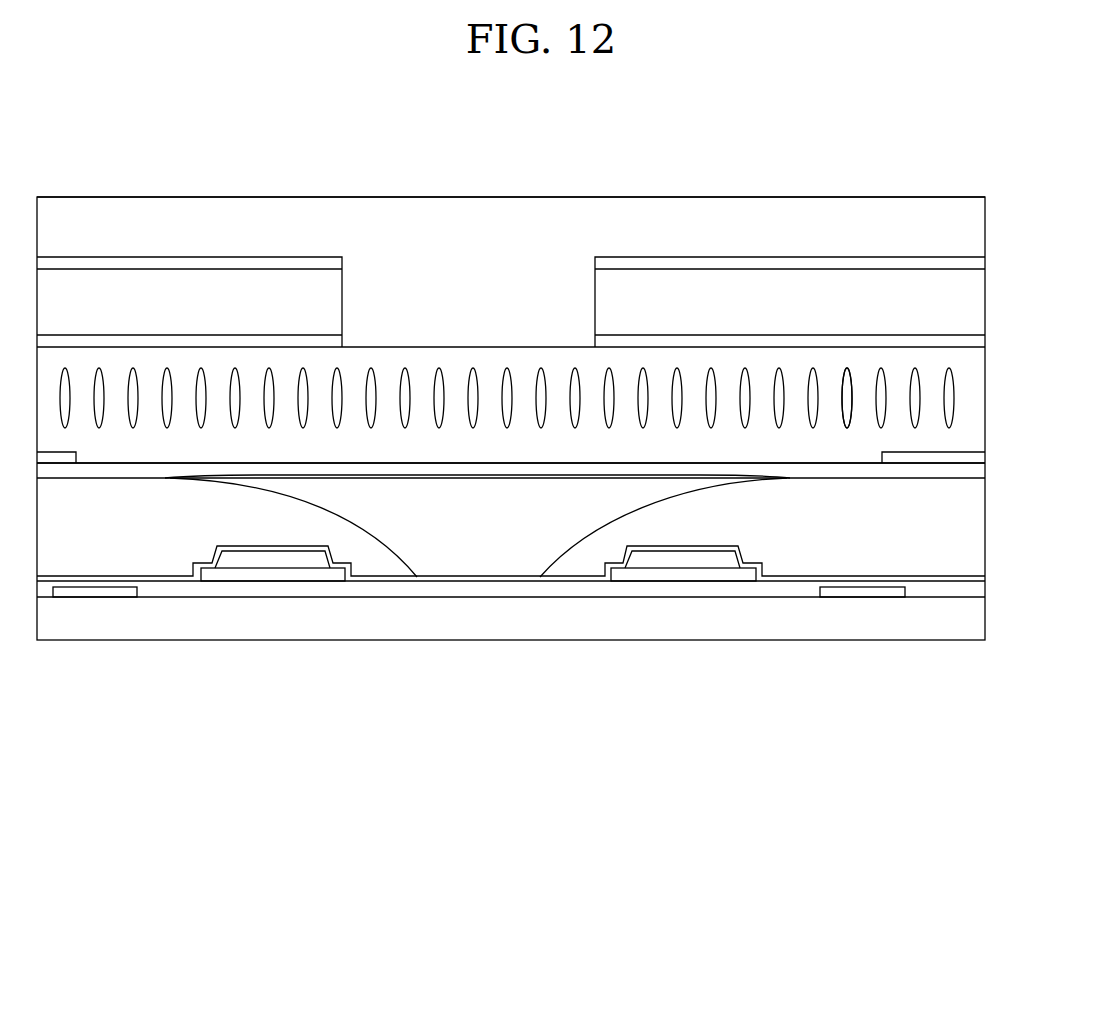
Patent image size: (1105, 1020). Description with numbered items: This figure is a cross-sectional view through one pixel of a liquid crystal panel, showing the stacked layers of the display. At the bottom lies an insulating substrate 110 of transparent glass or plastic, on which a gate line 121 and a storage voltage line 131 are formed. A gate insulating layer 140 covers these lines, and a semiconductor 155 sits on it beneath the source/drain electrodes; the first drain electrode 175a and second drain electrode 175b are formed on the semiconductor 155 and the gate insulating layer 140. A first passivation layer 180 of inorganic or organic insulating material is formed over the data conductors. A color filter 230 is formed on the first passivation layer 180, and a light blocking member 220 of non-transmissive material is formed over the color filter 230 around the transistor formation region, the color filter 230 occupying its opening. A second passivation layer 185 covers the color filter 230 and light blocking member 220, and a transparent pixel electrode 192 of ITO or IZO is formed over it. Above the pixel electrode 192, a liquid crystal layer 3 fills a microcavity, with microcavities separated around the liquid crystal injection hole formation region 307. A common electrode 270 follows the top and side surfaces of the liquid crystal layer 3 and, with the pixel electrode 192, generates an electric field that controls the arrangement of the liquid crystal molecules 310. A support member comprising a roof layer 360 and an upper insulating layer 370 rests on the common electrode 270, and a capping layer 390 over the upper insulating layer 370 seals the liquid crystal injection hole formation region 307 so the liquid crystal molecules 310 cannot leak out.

The liquid crystal layer 3 is at (1000, 412).
The insulating substrate 110 is at (409, 617).
The gate line 121 is at (89, 591).
The storage voltage line 131 is at (862, 591).
The gate insulating layer 140 is at (530, 585).
The semiconductor 155 is at (306, 575).
The first drain electrode 175a is at (648, 556).
The second drain electrode 175b is at (240, 556).
The first passivation layer 180 is at (478, 578).
The second passivation layer 185 is at (585, 470).
The pixel electrode 192 is at (975, 458).
The light blocking member 220 is at (446, 527).
The color filter 230 is at (968, 526).
The common electrode 270 is at (965, 340).
The liquid crystal injection hole formation region 307 is at (483, 252).
The liquid crystal molecules 310 is at (852, 387).
The roof layer 360 is at (963, 302).
The upper insulating layer 370 is at (719, 265).
The capping layer 390 is at (965, 222).